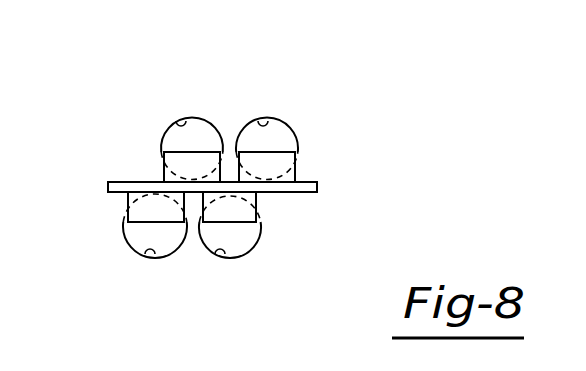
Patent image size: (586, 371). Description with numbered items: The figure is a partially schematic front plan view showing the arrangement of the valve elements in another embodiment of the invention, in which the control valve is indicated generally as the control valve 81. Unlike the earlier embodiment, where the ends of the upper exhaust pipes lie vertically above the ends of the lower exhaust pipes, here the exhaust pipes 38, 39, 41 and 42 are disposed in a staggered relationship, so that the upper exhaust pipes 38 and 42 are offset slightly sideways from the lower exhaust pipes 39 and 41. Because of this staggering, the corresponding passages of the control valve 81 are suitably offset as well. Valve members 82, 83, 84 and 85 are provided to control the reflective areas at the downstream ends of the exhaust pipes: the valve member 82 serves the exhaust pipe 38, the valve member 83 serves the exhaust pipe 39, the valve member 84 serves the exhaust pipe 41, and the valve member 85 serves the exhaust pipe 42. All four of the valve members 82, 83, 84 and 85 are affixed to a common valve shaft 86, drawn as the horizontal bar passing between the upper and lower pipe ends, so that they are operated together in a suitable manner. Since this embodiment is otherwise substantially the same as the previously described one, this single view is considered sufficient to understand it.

The control valve 81 is at (305, 83).
The exhaust pipe 38 is at (184, 118).
The exhaust pipe 42 is at (264, 118).
The exhaust pipe 39 is at (143, 253).
The exhaust pipe 41 is at (218, 254).
The valve member 82 is at (178, 150).
The valve member 85 is at (278, 147).
The valve member 83 is at (135, 227).
The valve member 84 is at (248, 224).
The valve shaft 86 is at (307, 193).